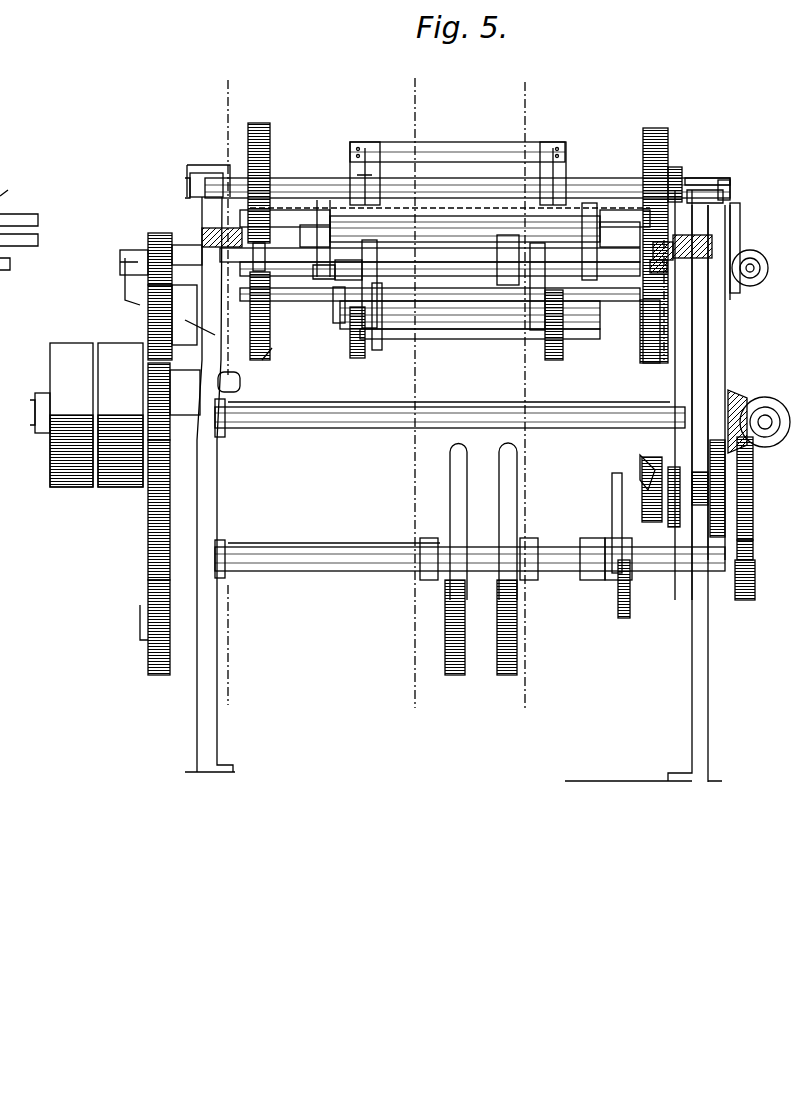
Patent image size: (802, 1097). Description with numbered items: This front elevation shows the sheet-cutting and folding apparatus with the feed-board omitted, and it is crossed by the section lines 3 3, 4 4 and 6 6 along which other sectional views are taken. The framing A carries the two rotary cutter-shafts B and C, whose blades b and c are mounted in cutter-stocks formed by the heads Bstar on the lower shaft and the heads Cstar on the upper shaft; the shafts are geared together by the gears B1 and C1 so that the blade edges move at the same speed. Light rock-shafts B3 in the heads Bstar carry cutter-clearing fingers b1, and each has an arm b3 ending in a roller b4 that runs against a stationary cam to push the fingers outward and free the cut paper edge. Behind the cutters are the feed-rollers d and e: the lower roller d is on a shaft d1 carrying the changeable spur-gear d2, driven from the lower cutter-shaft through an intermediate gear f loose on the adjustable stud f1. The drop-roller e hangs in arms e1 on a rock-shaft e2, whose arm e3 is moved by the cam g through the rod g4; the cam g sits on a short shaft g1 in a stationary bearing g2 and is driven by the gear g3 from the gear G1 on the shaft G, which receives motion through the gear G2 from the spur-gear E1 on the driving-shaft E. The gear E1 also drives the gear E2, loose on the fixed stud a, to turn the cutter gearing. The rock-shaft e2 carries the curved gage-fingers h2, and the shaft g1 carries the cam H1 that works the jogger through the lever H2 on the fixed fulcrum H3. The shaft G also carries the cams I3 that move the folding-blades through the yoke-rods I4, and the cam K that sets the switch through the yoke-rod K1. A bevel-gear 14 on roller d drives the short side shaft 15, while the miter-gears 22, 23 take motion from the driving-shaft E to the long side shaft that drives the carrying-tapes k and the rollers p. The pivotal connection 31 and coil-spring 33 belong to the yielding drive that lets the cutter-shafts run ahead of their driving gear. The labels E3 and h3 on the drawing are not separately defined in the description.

The section line 3 3 is at (222, 397).
The section line 4 4 is at (408, 399).
The section line 6 6 is at (527, 407).
The bevel-gear 14 is at (738, 282).
The short side shaft 15 is at (752, 268).
The miter-gear 22 is at (740, 395).
The miter-gear 23 is at (778, 392).
The pivotal connection 31 is at (117, 271).
The coil-spring 33 is at (118, 296).
The framing A is at (217, 470).
The lower cutter-shaft B is at (440, 296).
The gear B1 is at (245, 362).
The rock-shaft B3 is at (490, 323).
The cutter-head Bstar is at (565, 360).
The upper cutter-shaft C is at (467, 184).
The gear C1 is at (465, 243).
The cutter-head Cstar is at (372, 160).
The blade c is at (457, 151).
The lower feed-roller d is at (430, 260).
The feed-roller shaft d1 is at (317, 255).
The spur-gear d2 is at (160, 233).
The upper feed-roller e is at (465, 230).
The arm e1 is at (645, 238).
The rock-shaft e2 is at (300, 212).
The arm e3 is at (742, 238).
The shaft E3 is at (432, 412).
The driving-shaft E is at (40, 410).
The spur-gear E1 is at (160, 430).
The gear E2 is at (172, 372).
The intermediate gear f is at (167, 322).
The fixed stud f1 is at (206, 320).
The shaft G is at (470, 558).
The gear G1 is at (747, 590).
The gear G2 is at (144, 627).
The cam g is at (710, 525).
The short shaft g1 is at (753, 490).
The stationary bearing g2 is at (694, 488).
The gear g3 is at (753, 520).
The rod g4 is at (730, 348).
The cam H1 is at (662, 480).
The lever H2 is at (662, 395).
The fixed fulcrum H3 is at (665, 273).
The gage-fingers h2 is at (378, 252).
The hanger h3 is at (505, 252).
The cam I3 is at (499, 475).
The yoke-rod I4 is at (497, 590).
The cam K is at (597, 262).
The yoke-rod K1 is at (612, 495).
The carrying-tapes k is at (372, 310).
The fixed stud a is at (240, 383).
The blade b is at (470, 331).
The cutter-clearing fingers b1 is at (540, 330).
The arm b3 is at (336, 323).
The roller b4 is at (318, 305).
The roller p is at (485, 262).